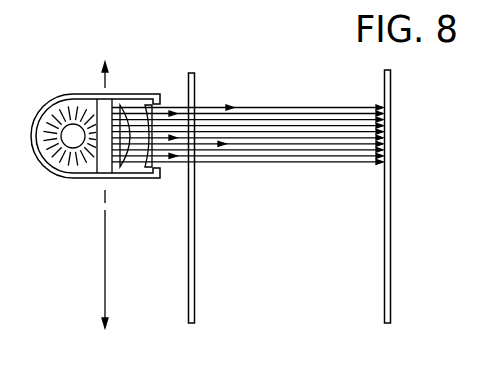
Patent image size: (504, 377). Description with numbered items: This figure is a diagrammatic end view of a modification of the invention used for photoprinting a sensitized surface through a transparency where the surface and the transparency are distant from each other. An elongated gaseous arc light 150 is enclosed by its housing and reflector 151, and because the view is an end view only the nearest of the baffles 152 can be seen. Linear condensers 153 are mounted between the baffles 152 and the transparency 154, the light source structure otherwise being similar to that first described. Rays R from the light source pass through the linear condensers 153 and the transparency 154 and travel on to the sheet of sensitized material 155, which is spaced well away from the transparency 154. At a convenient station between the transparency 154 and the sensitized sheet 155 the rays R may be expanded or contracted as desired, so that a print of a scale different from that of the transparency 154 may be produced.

The elongated gaseous arc light 150 is at (66, 158).
The housing and reflector 151 is at (42, 97).
The baffle 152 is at (125, 112).
The linear condenser 153 is at (150, 107).
The transparency 154 is at (195, 98).
The sheet of sensitized material 155 is at (384, 92).
The rays R is at (269, 146).